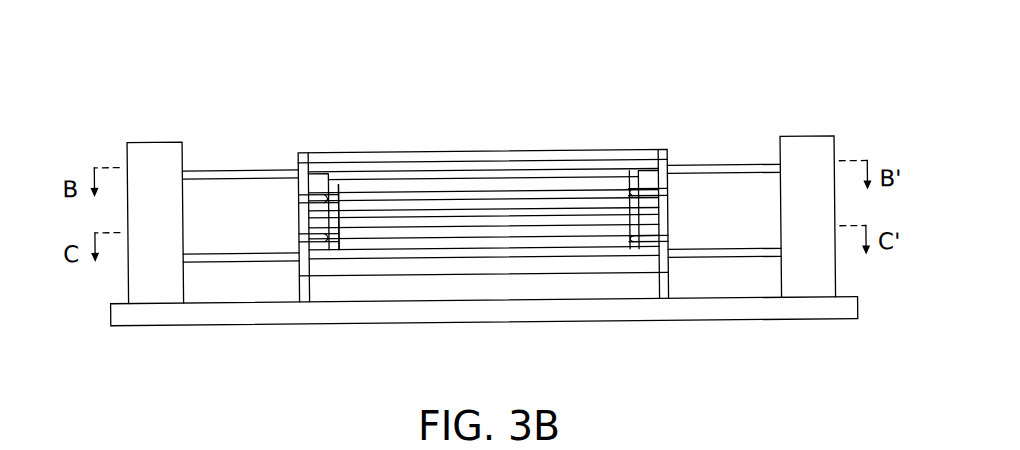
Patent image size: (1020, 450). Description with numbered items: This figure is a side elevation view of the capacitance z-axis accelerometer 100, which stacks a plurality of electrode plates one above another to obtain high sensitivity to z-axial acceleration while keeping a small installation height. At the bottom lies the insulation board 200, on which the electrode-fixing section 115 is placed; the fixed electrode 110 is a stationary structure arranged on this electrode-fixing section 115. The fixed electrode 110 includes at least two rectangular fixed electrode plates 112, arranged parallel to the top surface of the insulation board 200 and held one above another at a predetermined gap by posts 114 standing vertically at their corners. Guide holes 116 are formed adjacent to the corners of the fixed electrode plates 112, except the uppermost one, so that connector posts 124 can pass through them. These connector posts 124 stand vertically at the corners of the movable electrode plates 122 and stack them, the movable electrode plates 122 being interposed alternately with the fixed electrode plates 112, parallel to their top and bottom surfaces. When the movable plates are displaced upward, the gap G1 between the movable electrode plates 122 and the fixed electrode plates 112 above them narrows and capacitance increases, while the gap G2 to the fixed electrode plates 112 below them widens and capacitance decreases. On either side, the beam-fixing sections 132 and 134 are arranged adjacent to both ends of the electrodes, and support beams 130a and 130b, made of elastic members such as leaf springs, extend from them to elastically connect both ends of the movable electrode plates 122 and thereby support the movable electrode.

The accelerometer 100 is at (740, 90).
The fixed electrode 110 is at (634, 134).
The fixed electrode plates 112 is at (467, 238).
The posts 114 is at (298, 203).
The electrode-fixing section 115 is at (605, 286).
The guide holes 116 is at (328, 234).
The movable electrode plates 122 is at (547, 253).
The connector posts 124 is at (340, 178).
The support beam 130a is at (217, 255).
The support beam 130b is at (740, 252).
The beam-fixing section 132 is at (160, 147).
The beam-fixing section 134 is at (813, 149).
The insulation board 200 is at (483, 312).
The gap G1 is at (346, 181).
The gap G2 is at (373, 156).